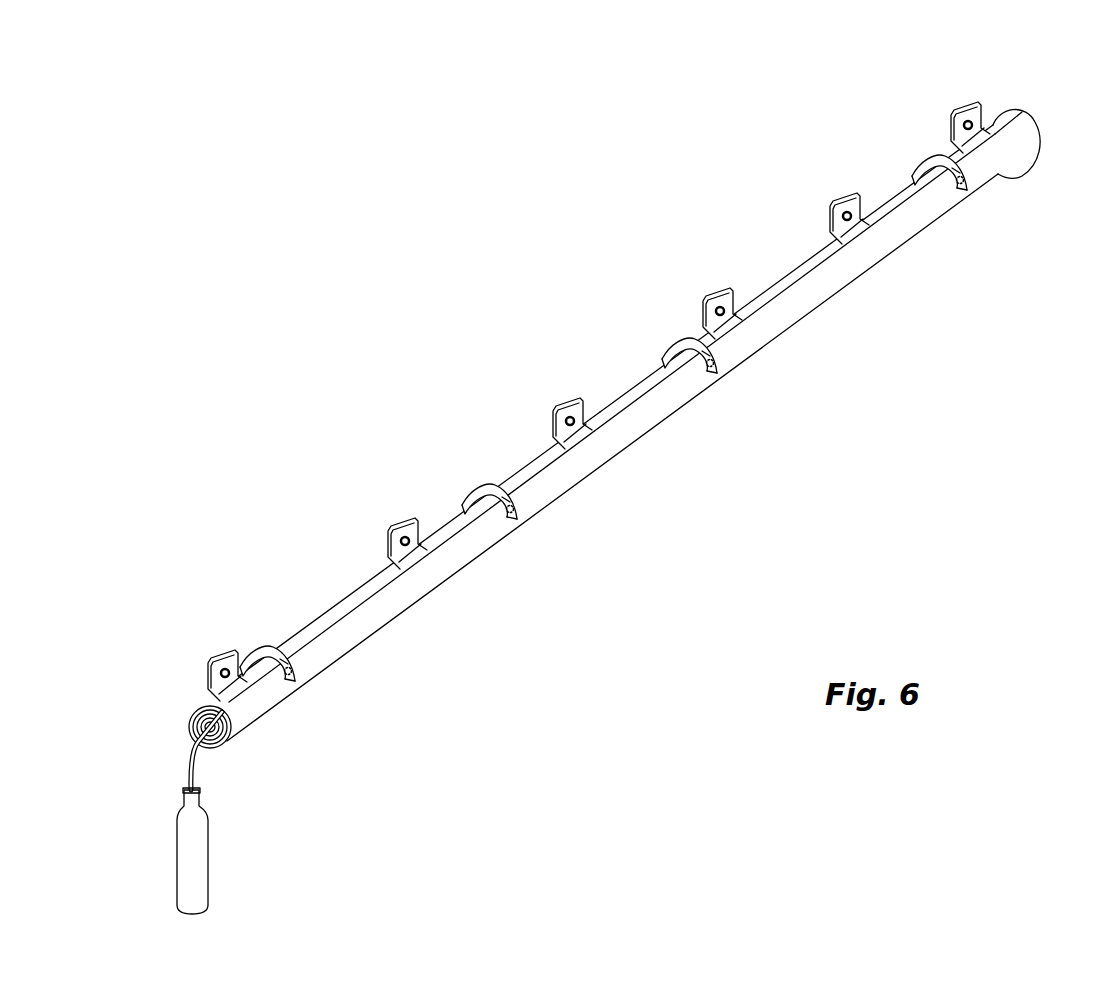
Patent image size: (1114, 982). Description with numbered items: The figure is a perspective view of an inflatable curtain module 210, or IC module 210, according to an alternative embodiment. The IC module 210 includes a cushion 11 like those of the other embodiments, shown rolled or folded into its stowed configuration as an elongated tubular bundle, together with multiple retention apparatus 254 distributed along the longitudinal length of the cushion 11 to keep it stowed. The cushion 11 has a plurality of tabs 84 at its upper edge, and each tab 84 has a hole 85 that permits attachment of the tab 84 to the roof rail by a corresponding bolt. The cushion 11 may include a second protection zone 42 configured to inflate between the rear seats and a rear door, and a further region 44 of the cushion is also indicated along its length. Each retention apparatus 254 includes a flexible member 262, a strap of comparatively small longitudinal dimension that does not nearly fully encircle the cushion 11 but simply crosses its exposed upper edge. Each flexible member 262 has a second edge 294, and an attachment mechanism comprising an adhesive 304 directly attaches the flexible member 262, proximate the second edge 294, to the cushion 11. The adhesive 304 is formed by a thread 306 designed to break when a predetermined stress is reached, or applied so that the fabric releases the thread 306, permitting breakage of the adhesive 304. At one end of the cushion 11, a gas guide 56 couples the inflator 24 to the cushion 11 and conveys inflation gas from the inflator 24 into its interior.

The inflatable curtain module 210 is at (436, 270).
The cushion 11 is at (332, 572).
The second protection zone 42 is at (360, 585).
The second tube section 44 is at (808, 262).
The tab 84 is at (213, 656).
The hole 85 is at (207, 668).
The retention apparatus 254 is at (670, 443).
The flexible member 262 is at (278, 655).
The adhesive 304 is at (291, 673).
The thread 306 is at (287, 679).
The second edge 294 is at (290, 686).
The gas guide 56 is at (190, 766).
The inflator 24 is at (184, 849).